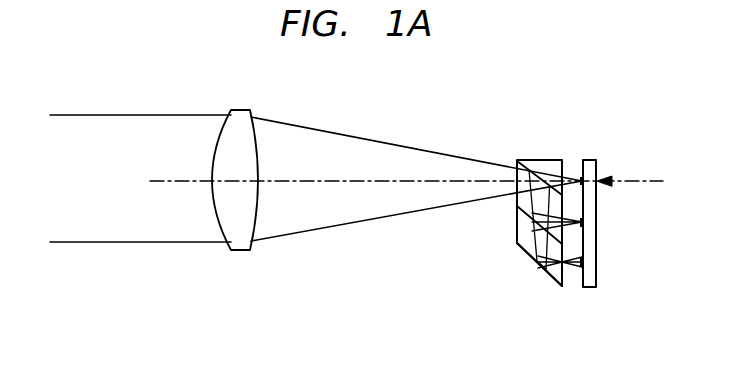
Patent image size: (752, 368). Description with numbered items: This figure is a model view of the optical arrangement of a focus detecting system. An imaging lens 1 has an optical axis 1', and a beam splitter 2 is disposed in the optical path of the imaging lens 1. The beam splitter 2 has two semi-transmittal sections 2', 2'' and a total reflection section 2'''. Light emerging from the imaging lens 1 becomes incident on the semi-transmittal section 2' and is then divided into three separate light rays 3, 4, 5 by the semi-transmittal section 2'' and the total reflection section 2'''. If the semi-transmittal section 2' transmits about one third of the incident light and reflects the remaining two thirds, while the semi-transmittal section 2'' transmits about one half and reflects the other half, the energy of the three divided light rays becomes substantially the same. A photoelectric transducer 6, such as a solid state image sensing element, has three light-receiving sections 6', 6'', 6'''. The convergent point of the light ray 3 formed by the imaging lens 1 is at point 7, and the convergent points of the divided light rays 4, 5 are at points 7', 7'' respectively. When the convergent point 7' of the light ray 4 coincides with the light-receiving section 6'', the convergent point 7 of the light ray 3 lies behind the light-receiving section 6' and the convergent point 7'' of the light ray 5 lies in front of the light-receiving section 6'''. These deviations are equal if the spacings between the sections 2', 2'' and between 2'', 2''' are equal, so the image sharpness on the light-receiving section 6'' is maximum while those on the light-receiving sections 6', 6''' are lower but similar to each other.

The imaging lens 1 is at (247, 162).
The optical axis 1' is at (406, 162).
The beam splitter 2 is at (539, 202).
The semi-transmittal section 2' is at (534, 193).
The semi-transmittal section 2'' is at (520, 227).
The total reflection section 2''' is at (530, 269).
The light ray 3 is at (571, 168).
The light ray 4 is at (575, 233).
The light ray 5 is at (573, 272).
The photoelectric transducer 6 is at (596, 202).
The light-receiving section 6' is at (610, 197).
The light-receiving section 6'' is at (612, 231).
The light-receiving section 6''' is at (615, 277).
The convergent point 7 is at (617, 152).
The convergent point 7' is at (557, 212).
The convergent point 7'' is at (559, 294).